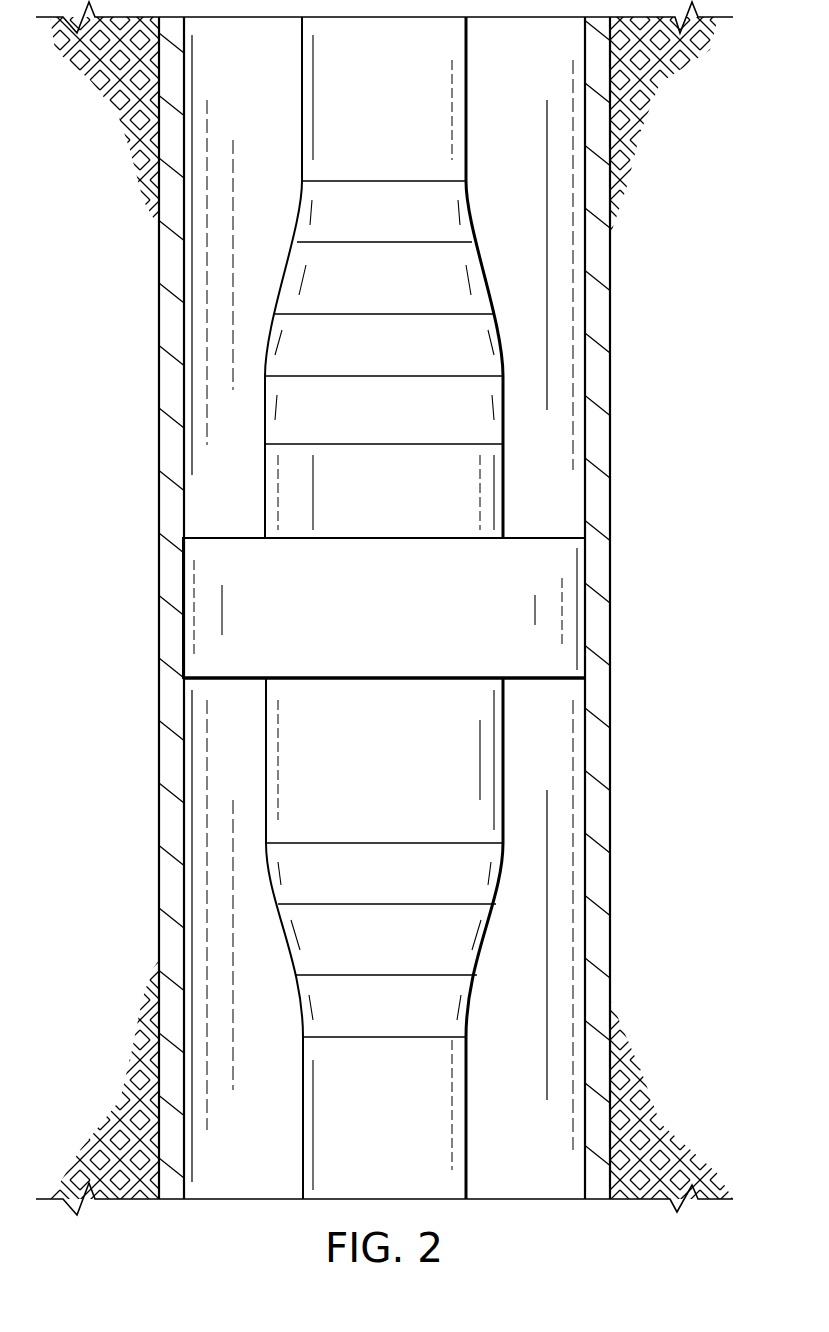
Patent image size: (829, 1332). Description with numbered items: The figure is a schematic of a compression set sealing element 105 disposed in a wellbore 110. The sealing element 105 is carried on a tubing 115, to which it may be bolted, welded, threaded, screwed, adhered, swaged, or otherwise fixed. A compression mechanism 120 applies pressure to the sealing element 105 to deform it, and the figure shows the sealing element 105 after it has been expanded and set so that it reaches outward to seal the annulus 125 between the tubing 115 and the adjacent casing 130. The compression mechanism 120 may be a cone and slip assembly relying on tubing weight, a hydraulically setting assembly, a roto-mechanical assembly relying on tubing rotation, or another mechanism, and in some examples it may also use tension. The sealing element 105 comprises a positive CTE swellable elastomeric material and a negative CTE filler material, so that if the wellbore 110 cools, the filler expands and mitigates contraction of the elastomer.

The compression set sealing element 105 is at (527, 537).
The wellbore 110 is at (609, 313).
The tubing 115 is at (302, 1117).
The compression mechanism 120 is at (277, 492).
The annulus 125 is at (585, 918).
The casing 130 is at (170, 318).